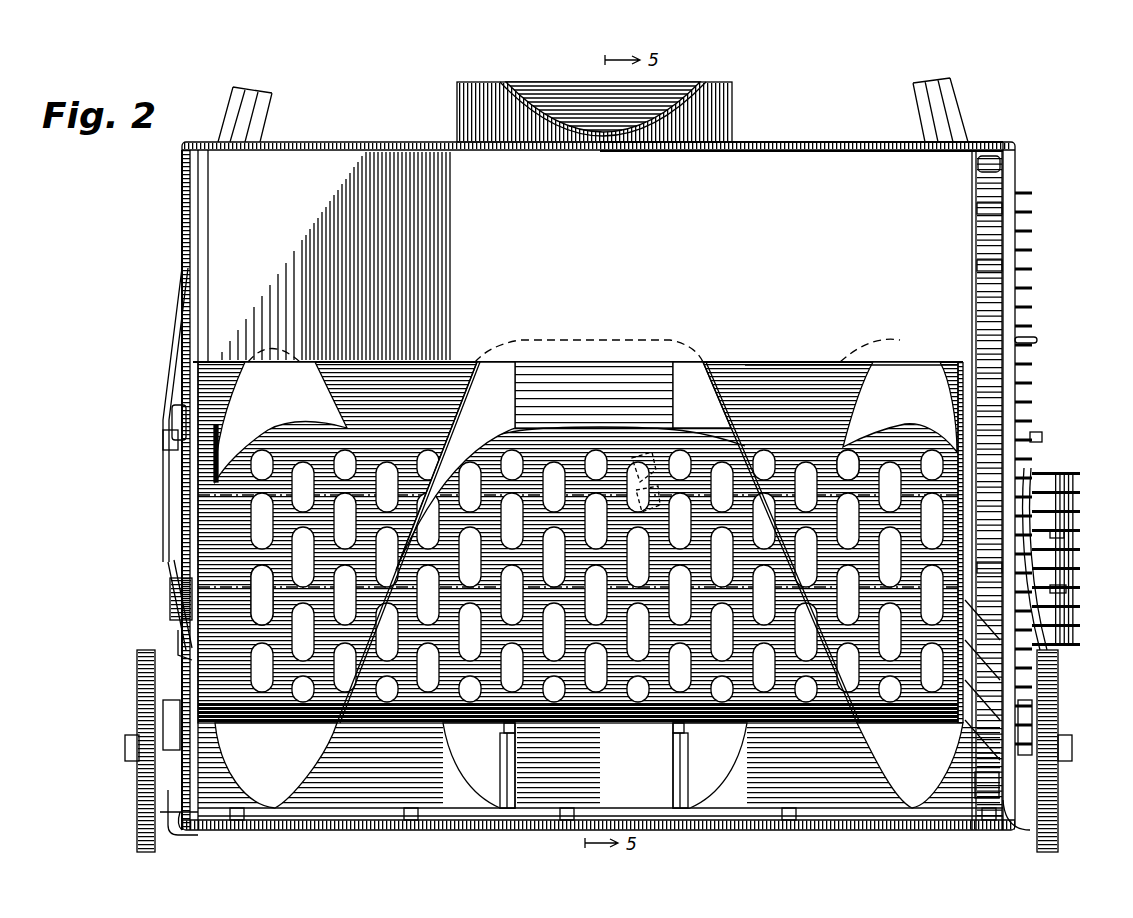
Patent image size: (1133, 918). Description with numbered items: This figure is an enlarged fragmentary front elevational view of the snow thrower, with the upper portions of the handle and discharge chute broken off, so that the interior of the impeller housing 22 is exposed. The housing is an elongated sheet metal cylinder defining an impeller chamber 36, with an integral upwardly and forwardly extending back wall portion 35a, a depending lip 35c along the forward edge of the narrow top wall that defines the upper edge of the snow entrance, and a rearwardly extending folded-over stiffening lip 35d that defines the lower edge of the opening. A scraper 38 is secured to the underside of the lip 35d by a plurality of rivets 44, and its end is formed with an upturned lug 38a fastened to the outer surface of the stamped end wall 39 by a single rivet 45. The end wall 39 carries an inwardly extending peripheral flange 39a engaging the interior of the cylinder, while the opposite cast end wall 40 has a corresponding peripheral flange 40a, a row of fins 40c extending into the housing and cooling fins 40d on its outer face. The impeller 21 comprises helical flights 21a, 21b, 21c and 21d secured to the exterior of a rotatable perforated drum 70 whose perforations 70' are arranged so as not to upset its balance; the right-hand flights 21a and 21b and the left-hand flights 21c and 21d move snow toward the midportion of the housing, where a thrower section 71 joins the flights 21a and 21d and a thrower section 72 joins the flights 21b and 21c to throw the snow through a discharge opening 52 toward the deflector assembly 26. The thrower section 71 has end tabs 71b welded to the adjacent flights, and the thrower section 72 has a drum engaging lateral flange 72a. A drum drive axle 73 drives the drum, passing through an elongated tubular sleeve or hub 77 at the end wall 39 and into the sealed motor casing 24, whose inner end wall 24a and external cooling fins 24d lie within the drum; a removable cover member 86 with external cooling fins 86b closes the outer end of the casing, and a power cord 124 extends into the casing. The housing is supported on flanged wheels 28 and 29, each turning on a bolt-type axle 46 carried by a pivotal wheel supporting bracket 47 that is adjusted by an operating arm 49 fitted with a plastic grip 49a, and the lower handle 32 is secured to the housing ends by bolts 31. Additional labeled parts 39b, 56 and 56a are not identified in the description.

The impeller 21 is at (330, 790).
The helical flight 21a is at (270, 372).
The helical flight 21b is at (278, 800).
The helical flight 21c is at (910, 800).
The helical flight 21d is at (925, 372).
The impeller housing 22 is at (365, 140).
The sealed motor casing 24 is at (830, 450).
The casing end wall 24a is at (850, 455).
The external cooling fins 24d is at (642, 494).
The deflector assembly 26 is at (735, 96).
The flanged wheel 28 is at (140, 655).
The flanged wheel 29 is at (1050, 802).
The bolts 31 is at (163, 440).
The lower handle 32 is at (272, 96).
The back wall portion 35a is at (808, 172).
The depending lip 35c is at (780, 142).
The stiffening lip 35d is at (378, 812).
The impeller chamber 36 is at (760, 378).
The scraper blade 38 is at (758, 830).
The upturned lug 38a is at (172, 814).
The end wall 39 is at (182, 480).
The peripheral flange 39a is at (200, 243).
The bracket 39b is at (172, 412).
The end wall 40 is at (1012, 302).
The peripheral flange 40a is at (975, 790).
The row of fins 40c is at (975, 265).
The cooling fins 40d is at (1033, 250).
The rivets 44 is at (236, 814).
The rivet 45 is at (172, 796).
The bolt-type axle 46 is at (124, 746).
The wheel supporting bracket 47 is at (162, 720).
The operating arm 49 is at (168, 640).
The plastic grip 49a is at (170, 565).
The discharge opening 52 is at (470, 362).
The hopper 56 is at (457, 96).
The hopper lip 56a is at (540, 86).
The perforated drum 70 is at (578, 569).
The perforations 70' is at (577, 576).
The thrower section 71 is at (556, 812).
The end tabs 71b is at (490, 800).
The thrower section 72 is at (588, 372).
The lateral flange 72a is at (592, 420).
The drum drive axle 73 is at (262, 585).
The tubular sleeve 77 is at (168, 590).
The cover member 86 is at (1072, 566).
The external cooling fins 86b is at (1062, 478).
The power cord 124 is at (1038, 342).